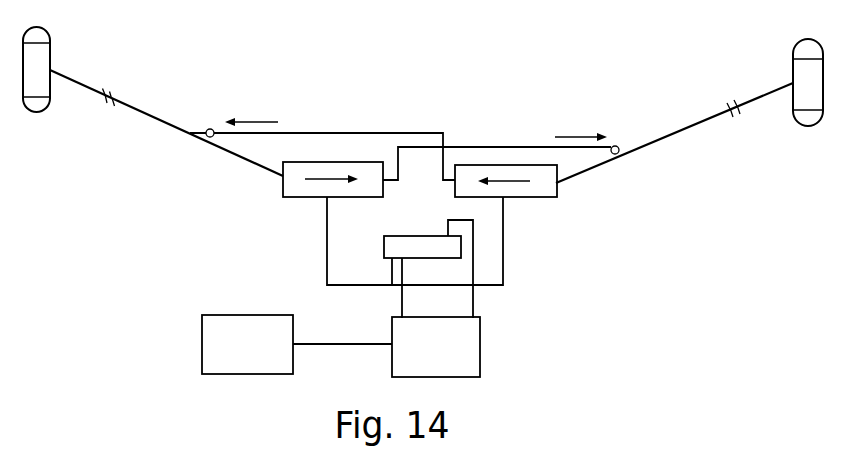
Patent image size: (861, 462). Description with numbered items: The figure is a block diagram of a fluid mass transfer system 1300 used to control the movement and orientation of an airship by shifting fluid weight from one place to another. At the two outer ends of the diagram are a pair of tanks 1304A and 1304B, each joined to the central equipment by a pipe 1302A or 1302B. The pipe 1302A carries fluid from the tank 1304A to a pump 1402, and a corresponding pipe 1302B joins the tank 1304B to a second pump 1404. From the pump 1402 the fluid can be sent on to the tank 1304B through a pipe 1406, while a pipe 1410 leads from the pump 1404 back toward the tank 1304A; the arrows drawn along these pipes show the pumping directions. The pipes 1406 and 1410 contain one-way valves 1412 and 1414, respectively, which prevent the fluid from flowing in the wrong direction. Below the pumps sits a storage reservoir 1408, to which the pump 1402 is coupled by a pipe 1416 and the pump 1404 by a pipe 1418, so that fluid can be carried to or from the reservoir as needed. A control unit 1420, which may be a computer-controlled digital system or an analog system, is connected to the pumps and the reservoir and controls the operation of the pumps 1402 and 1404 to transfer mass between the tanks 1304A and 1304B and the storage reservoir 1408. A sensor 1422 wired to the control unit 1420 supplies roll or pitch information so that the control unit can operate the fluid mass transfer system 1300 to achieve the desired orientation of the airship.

The fluid mass transfer system 1300 is at (412, 46).
The pipe 1302A is at (157, 119).
The pipe 1302B is at (688, 132).
The tank 1304A is at (51, 53).
The tank 1304B is at (792, 62).
The pump 1402 is at (306, 189).
The pump 1404 is at (520, 191).
The pipe 1406 is at (495, 146).
The storage reservoir 1408 is at (410, 246).
The pipe 1410 is at (306, 133).
The one-way valve 1412 is at (615, 146).
The one-way valve 1414 is at (207, 129).
The pipe 1416 is at (327, 234).
The pipe 1418 is at (503, 245).
The control unit 1420 is at (466, 353).
The sensor 1422 is at (210, 339).